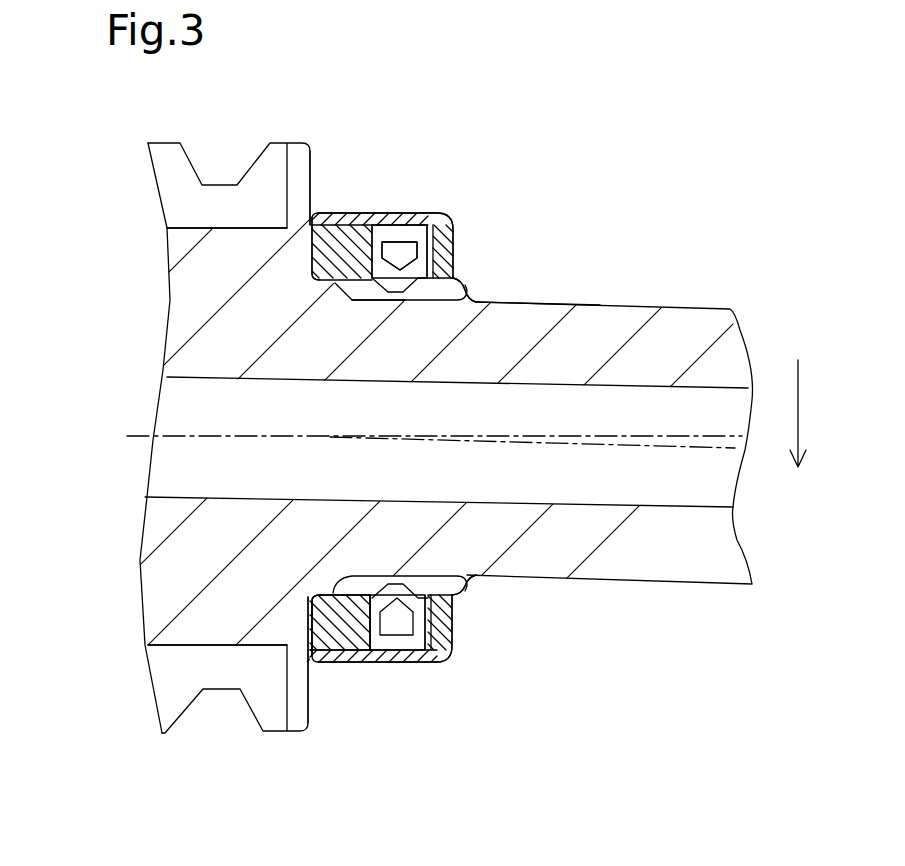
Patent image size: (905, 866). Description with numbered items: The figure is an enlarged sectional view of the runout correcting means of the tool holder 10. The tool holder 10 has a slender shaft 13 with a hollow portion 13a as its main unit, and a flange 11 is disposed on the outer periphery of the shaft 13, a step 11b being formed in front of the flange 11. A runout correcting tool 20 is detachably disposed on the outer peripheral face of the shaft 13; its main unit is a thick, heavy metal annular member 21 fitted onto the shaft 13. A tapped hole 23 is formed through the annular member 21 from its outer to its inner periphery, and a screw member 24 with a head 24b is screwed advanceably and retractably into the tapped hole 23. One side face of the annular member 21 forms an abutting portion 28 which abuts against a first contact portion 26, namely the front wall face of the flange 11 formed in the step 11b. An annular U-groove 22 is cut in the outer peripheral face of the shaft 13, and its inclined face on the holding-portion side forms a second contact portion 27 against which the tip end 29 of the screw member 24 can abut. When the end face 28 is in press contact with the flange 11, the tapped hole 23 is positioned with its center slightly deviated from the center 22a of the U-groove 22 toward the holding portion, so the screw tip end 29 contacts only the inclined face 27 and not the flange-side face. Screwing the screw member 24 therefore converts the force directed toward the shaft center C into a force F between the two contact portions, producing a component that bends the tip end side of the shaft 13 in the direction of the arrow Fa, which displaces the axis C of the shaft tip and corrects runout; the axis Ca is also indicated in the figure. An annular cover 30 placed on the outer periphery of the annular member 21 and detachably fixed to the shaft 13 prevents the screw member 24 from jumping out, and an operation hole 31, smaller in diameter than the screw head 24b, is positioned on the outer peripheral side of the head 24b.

The tool holder 10 is at (125, 575).
The flange 11 is at (177, 189).
The step 11b is at (310, 598).
The shaft 13 is at (715, 572).
The hollow portion 13a is at (175, 415).
The runout correcting tool 20 is at (375, 200).
The annular member 21 is at (330, 617).
The U-groove 22 is at (340, 284).
The center of the U-groove 22a is at (383, 299).
The tapped hole 23 is at (398, 232).
The screw member 24 is at (453, 248).
The head 24b is at (407, 255).
The first contact portion 26 is at (308, 240).
The second contact portion 27 is at (473, 296).
The abutting portion 28 is at (333, 228).
The tip end of the screw member 29 is at (460, 287).
The annular cover 30 is at (356, 658).
The operation hole 31 is at (393, 658).
The shaft center C is at (677, 447).
The axis of the annular member Ca is at (213, 437).
The force F is at (555, 303).
The bending direction Fa is at (798, 405).